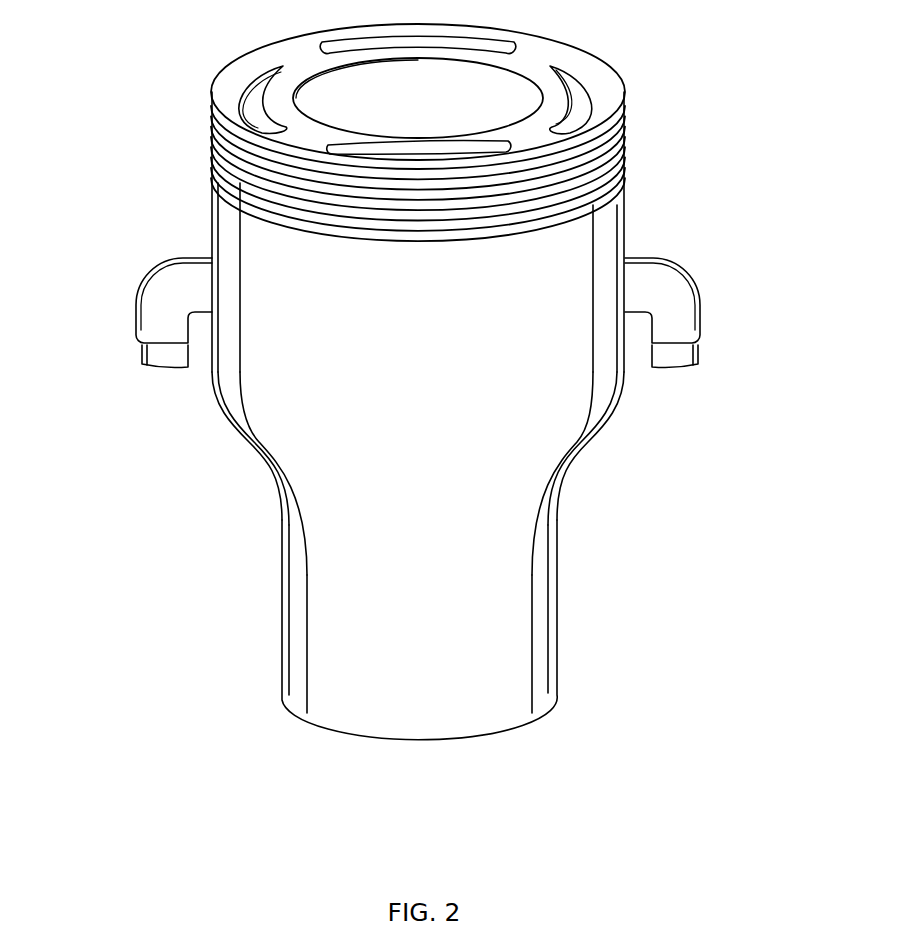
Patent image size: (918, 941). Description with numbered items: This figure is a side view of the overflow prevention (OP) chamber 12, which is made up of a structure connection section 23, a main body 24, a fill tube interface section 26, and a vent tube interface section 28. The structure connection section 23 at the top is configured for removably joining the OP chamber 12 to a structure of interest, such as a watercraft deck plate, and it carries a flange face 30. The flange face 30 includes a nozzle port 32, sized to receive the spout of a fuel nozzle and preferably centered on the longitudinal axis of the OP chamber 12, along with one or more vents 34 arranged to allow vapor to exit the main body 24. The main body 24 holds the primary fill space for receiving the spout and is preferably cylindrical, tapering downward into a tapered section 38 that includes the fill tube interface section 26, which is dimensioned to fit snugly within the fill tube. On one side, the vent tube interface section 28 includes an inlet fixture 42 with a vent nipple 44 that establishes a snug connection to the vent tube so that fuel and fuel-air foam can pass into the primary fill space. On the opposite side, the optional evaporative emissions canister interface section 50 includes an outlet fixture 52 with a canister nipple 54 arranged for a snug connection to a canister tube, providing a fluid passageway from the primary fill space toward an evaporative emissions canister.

The OP chamber 12 is at (156, 175).
The structure connection section 23 is at (193, 145).
The main body 24 is at (642, 241).
The fill tube interface section 26 is at (258, 657).
The vent tube interface section 28 is at (719, 283).
The flange face 30 is at (217, 85).
The nozzle port 32 is at (513, 90).
The vents 34 is at (257, 120).
The tapered section 38 is at (599, 458).
The inlet fixture 42 is at (707, 312).
The vent nipple 44 is at (698, 357).
The evaporative emissions canister interface section 50 is at (170, 246).
The outlet fixture 52 is at (140, 292).
The canister nipple 54 is at (142, 355).